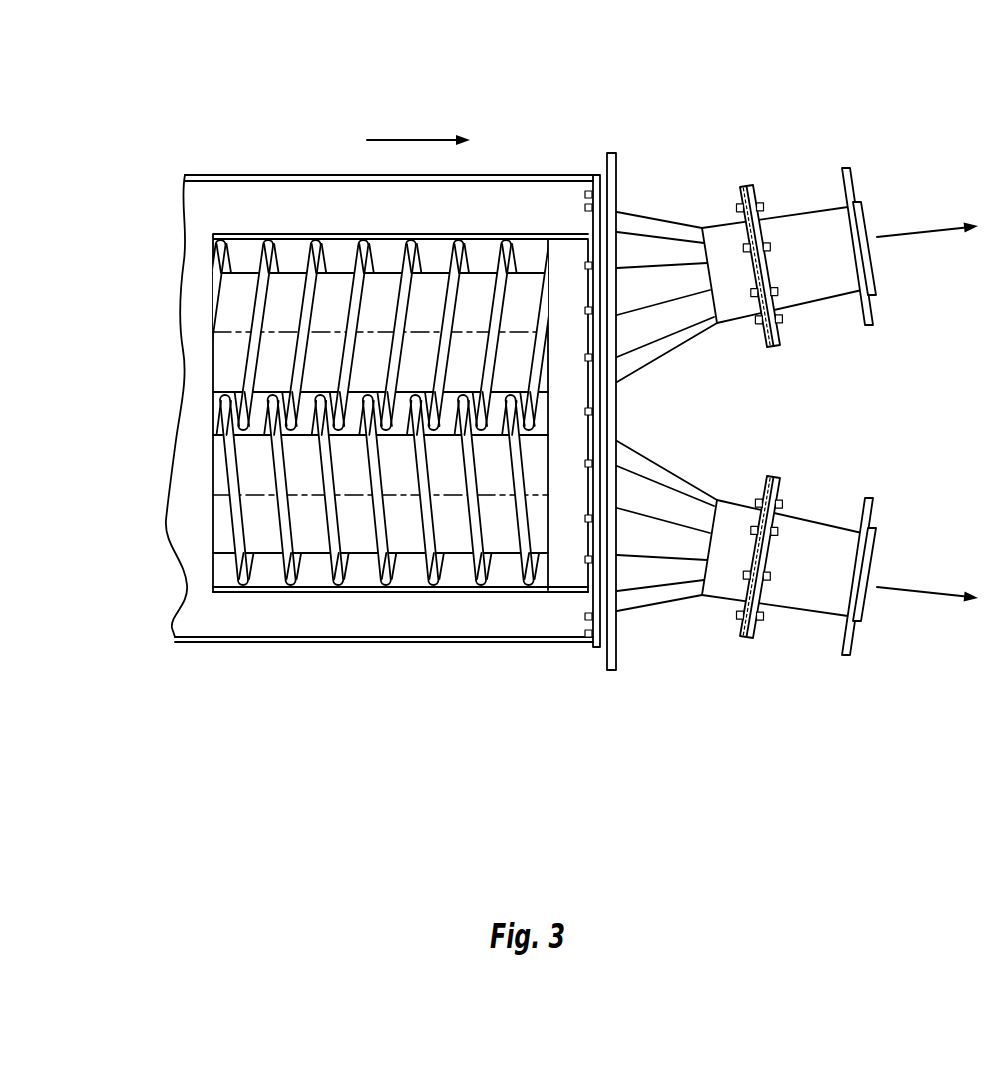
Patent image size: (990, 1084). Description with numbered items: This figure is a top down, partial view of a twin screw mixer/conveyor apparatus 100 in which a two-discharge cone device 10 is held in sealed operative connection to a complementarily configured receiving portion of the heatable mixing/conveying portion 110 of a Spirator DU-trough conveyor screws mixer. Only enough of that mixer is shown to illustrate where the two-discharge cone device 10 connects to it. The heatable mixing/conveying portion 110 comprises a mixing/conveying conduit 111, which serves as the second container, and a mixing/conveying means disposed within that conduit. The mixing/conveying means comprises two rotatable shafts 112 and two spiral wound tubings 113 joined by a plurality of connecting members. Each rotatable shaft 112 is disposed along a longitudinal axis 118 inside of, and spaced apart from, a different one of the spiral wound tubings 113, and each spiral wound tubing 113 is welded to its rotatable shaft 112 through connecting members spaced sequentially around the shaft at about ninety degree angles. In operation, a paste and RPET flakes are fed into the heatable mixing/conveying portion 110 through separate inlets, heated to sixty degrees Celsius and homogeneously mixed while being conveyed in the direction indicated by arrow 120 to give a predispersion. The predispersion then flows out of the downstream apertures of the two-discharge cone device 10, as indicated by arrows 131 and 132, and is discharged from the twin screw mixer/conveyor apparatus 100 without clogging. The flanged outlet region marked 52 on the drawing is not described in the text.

The twin screw mixer/conveyor apparatus 100 is at (250, 109).
The heatable mixing/conveying portion 110 is at (213, 720).
The mixing/conveying conduit 111 is at (284, 234).
The rotatable shaft 112 is at (263, 533).
The spiral wound tubing 113 is at (225, 510).
The longitudinal axis 118 is at (496, 556).
The arrow indicating direction of flow 120 is at (422, 140).
The 2-discharge cone device 10 is at (866, 720).
The outlet flanges 52 is at (872, 496).
The arrow indicating discharge 131 is at (906, 228).
The arrow indicating discharge 132 is at (906, 592).